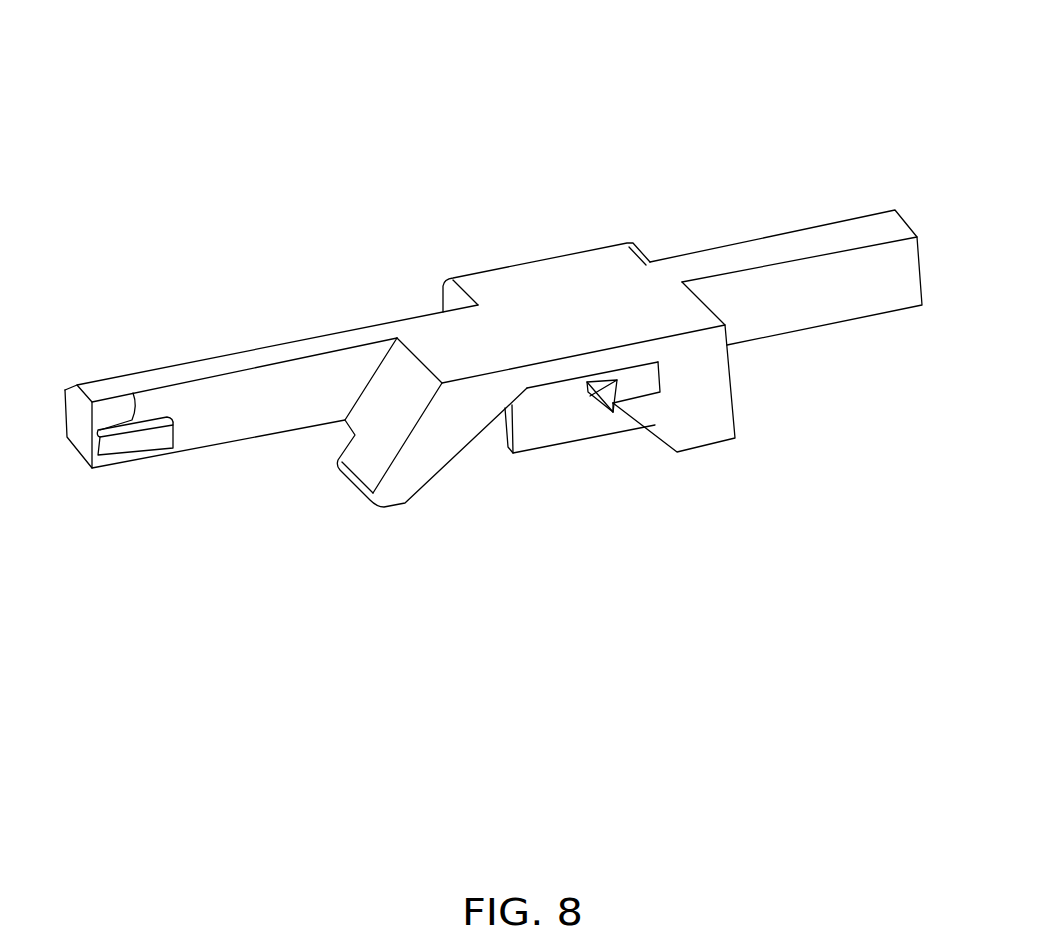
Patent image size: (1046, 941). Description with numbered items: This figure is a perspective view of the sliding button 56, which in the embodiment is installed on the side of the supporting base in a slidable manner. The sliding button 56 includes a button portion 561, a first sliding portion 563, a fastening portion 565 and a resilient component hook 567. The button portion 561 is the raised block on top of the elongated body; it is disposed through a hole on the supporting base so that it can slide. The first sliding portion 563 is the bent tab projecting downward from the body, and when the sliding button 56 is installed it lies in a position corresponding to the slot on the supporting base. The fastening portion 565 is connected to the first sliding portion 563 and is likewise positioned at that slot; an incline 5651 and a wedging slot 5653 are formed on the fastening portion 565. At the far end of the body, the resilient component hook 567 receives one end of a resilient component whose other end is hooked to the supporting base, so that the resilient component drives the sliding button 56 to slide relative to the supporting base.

The sliding button 56 is at (496, 350).
The button portion 561 is at (557, 267).
The first sliding portion 563 is at (439, 472).
The fastening portion 565 is at (631, 509).
The incline 5651 is at (660, 440).
The wedging slot 5653 is at (607, 400).
The resilient component hook 567 is at (148, 438).